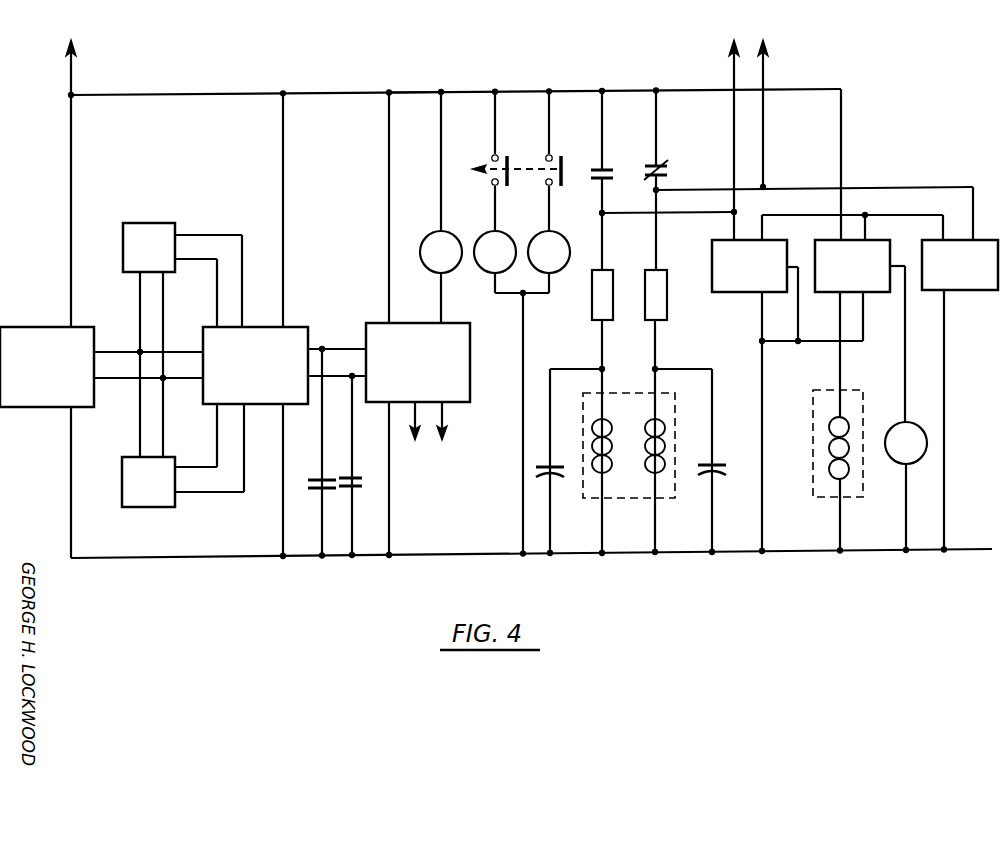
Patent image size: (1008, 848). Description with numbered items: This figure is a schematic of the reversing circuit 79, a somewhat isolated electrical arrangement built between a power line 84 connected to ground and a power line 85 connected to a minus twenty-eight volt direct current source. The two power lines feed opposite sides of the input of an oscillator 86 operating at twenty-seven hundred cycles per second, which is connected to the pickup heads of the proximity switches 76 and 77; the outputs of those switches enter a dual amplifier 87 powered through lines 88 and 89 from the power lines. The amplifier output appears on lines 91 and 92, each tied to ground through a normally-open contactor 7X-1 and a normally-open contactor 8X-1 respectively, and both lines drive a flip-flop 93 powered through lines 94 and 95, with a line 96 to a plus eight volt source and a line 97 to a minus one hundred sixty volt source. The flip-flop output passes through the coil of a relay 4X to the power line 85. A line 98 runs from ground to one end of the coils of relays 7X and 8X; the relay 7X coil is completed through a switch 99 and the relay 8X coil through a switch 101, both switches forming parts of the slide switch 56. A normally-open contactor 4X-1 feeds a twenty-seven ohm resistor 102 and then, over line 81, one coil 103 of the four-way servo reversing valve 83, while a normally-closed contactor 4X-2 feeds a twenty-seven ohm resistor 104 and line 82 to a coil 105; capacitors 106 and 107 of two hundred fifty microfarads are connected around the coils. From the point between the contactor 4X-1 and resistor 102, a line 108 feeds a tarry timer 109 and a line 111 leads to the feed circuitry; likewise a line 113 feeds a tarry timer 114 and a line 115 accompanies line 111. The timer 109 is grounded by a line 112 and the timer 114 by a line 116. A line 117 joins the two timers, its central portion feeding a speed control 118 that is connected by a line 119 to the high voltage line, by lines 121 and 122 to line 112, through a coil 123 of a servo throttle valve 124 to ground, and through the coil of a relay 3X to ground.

The power line 85 is at (105, 95).
The reversing circuit 79 is at (405, 90).
The proximity switch 76 is at (147, 225).
The proximity switch 77 is at (125, 477).
The oscillator 86 is at (40, 335).
The dual amplifier 87 is at (248, 327).
The line 88 is at (283, 196).
The line 89 is at (283, 508).
The line 91 is at (350, 346).
The line 92 is at (340, 378).
The normally-open contactor 7X-1 is at (308, 480).
The normally-open contactor 8X-1 is at (360, 486).
The flip-flop 93 is at (470, 370).
The line 94 is at (389, 196).
The line 95 is at (389, 520).
The line 96 is at (412, 432).
The line 97 is at (444, 424).
The power line 84 is at (470, 555).
The relay 4X is at (436, 238).
The relay 7X is at (490, 238).
The relay 8X is at (545, 238).
The switch 99 is at (510, 157).
The switch 101 is at (564, 158).
The slide switch 56 is at (520, 174).
The line 98 is at (524, 322).
The normally-open contactor 4X-1 is at (605, 168).
The normally-closed contactor 4X-2 is at (672, 166).
The resistor 102 is at (611, 278).
The resistor 104 is at (665, 278).
The line 81 is at (602, 340).
The line 82 is at (656, 350).
The capacitor 106 is at (568, 460).
The capacitor 107 is at (716, 470).
The coil 103 is at (608, 474).
The coil 105 is at (666, 424).
The servo reversing valve 83 is at (680, 498).
The line 111 is at (733, 66).
The line 115 is at (765, 62).
The line 119 is at (841, 130).
The line 113 is at (678, 190).
The line 108 is at (674, 213).
The line 117 is at (816, 216).
The tarry timer 109 is at (748, 292).
The speed control 118 is at (872, 292).
The tarry timer 114 is at (966, 290).
The line 112 is at (762, 320).
The line 121 is at (800, 310).
The line 122 is at (852, 342).
The coil 123 is at (850, 420).
The servo throttle valve 124 is at (812, 440).
The relay 3X is at (910, 460).
The line 116 is at (944, 356).